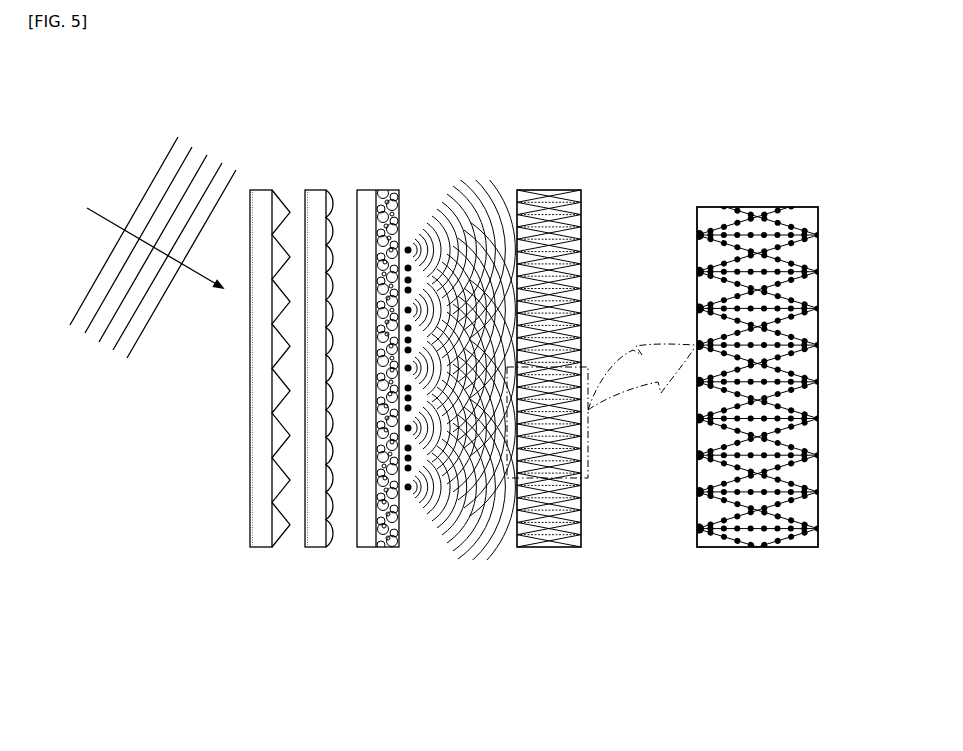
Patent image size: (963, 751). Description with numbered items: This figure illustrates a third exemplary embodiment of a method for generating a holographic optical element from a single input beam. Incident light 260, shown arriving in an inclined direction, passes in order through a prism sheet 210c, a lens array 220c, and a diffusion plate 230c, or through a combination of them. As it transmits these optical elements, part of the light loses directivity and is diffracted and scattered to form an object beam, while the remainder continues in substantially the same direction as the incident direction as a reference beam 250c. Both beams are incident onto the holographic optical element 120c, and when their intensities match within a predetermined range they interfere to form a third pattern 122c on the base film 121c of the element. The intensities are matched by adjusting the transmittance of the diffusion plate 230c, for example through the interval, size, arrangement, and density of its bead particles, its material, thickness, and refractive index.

The incident light 260 is at (147, 170).
The prism sheet 210c is at (281, 548).
The lens array 220c is at (328, 548).
The diffusion plate 230c is at (383, 548).
The reference beam 250c is at (448, 540).
The holographic optical element 120c is at (547, 548).
The base film 121c is at (805, 328).
The third pattern 122c is at (805, 428).